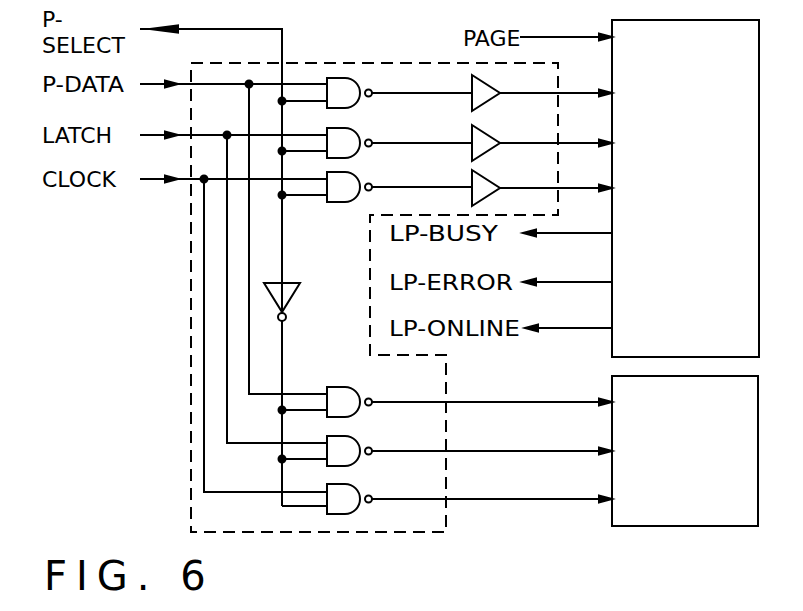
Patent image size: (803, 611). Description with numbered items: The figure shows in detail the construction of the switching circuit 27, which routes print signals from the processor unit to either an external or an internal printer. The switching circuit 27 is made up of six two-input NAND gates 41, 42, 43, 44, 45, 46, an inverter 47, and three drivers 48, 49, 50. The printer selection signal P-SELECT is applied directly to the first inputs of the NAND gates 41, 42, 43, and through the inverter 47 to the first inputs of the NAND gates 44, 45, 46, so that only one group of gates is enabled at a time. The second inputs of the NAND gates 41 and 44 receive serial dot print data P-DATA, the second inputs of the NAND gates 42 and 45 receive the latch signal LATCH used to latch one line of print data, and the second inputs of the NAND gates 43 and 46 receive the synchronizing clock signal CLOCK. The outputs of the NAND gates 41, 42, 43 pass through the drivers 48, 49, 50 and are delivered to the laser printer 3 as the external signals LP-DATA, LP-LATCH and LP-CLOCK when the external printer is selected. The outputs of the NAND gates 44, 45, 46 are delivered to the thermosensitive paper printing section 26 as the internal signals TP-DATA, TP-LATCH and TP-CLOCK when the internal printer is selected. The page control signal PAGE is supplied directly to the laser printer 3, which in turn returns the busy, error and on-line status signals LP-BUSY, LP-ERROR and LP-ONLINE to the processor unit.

The laser printer 3 is at (612, 350).
The thermosensitive paper printing section 26 is at (612, 520).
The switching circuit 27 is at (191, 485).
The NAND gate 41 is at (362, 80).
The NAND gate 42 is at (362, 130).
The NAND gate 43 is at (362, 174).
The NAND gate 44 is at (360, 388).
The NAND gate 45 is at (360, 438).
The NAND gate 46 is at (360, 486).
The inverter 47 is at (292, 298).
The driver 48 is at (492, 82).
The driver 49 is at (492, 130).
The driver 50 is at (492, 176).